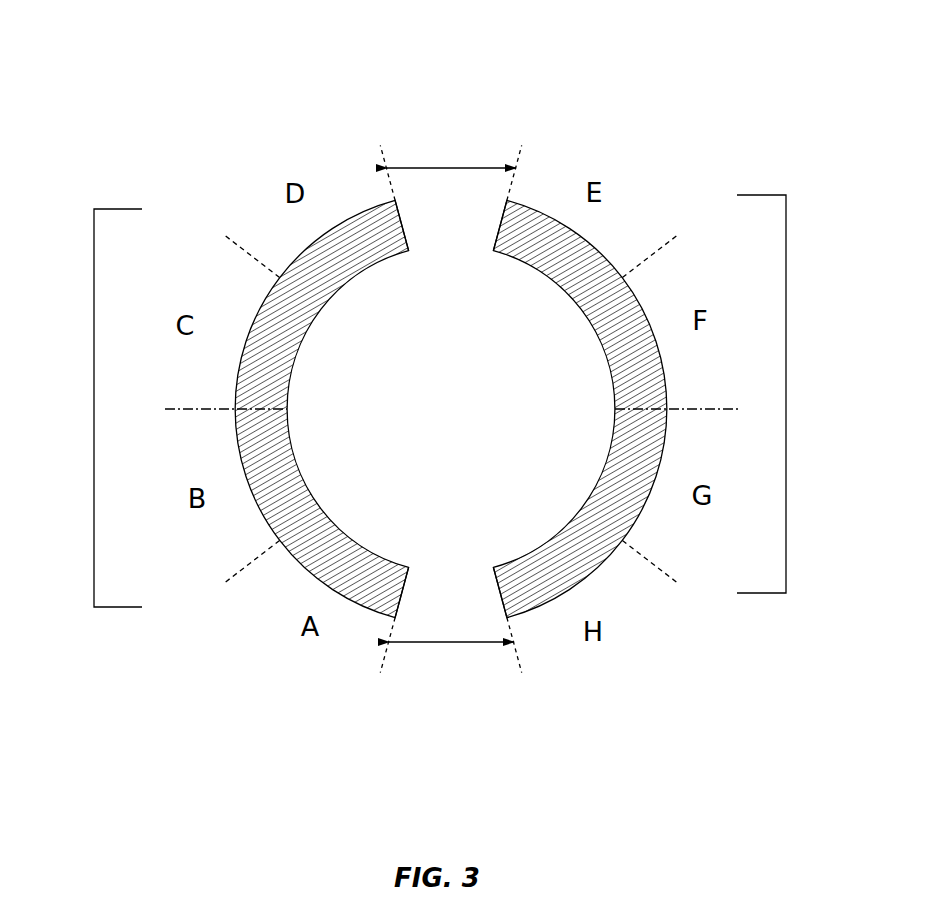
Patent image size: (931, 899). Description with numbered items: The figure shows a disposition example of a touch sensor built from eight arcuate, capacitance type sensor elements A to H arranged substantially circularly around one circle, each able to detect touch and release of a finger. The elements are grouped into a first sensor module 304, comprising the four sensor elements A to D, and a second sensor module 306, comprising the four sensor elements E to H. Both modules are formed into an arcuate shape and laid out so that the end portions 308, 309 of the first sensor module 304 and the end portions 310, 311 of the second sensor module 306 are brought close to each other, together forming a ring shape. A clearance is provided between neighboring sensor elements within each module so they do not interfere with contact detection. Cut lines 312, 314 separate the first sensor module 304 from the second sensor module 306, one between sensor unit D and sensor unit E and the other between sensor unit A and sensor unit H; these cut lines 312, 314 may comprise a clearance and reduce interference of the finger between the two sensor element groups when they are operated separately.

The first sensor module 304 is at (217, 408).
The second sensor module 306 is at (673, 406).
The end portion of the first sensor module 308 is at (409, 567).
The end portion of the first sensor module 309 is at (409, 251).
The end portion of the second sensor module 310 is at (493, 567).
The end portion of the second sensor module 311 is at (493, 251).
The cut line 312 is at (448, 167).
The cut line 314 is at (458, 643).